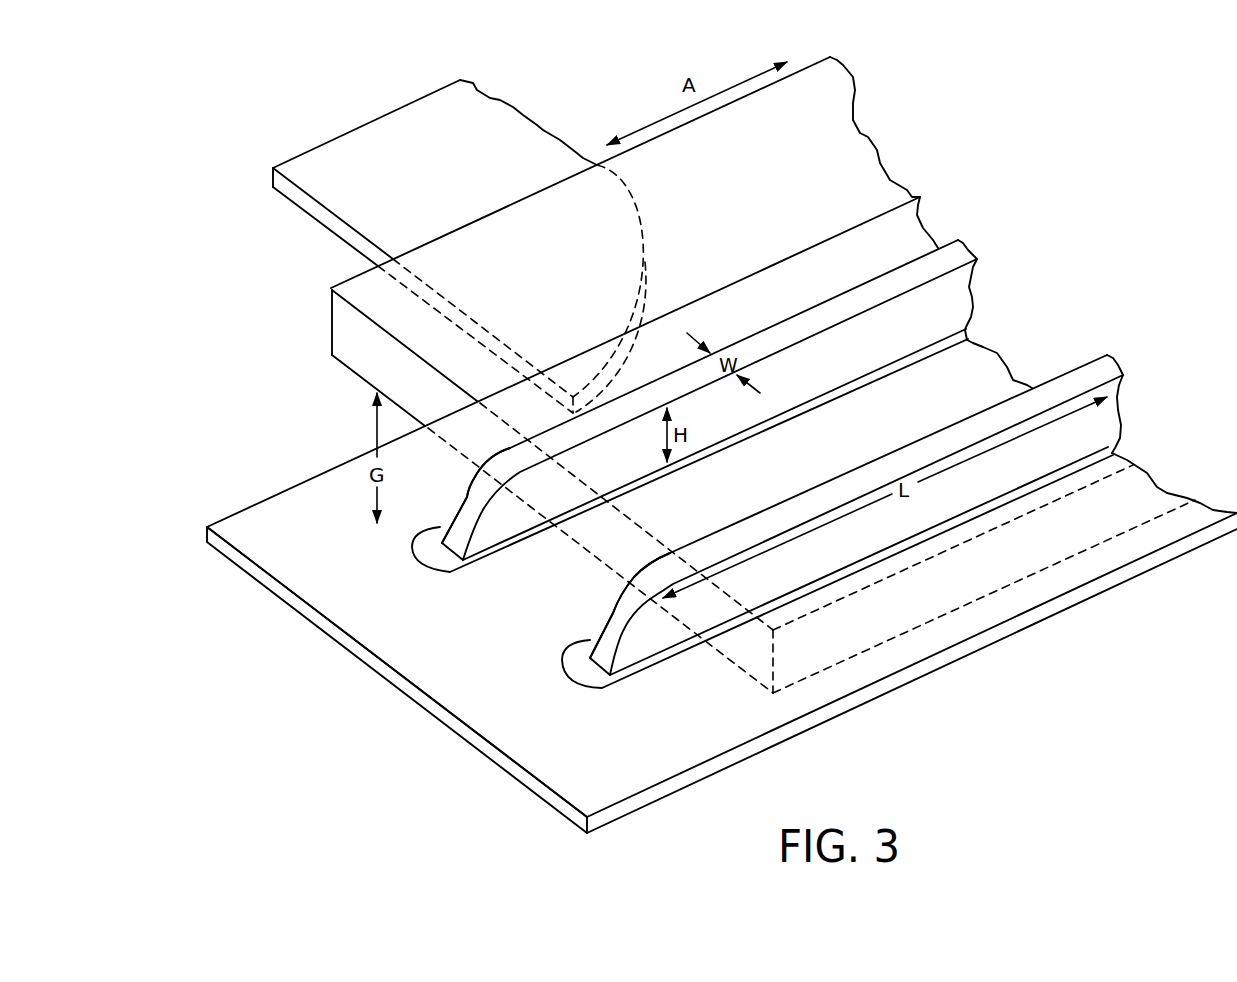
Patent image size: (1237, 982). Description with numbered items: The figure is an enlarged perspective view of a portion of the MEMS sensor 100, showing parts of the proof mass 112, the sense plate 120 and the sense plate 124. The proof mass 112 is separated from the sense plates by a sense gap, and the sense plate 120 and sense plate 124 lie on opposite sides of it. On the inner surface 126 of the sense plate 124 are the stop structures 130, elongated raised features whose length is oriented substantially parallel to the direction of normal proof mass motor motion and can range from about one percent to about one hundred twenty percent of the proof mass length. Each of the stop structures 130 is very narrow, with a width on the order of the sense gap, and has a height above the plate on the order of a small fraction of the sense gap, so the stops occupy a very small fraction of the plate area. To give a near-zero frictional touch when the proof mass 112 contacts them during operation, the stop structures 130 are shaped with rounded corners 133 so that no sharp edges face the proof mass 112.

The MEMS sensor 100 is at (233, 413).
The proof mass 112 is at (367, 288).
The sense plate 120 is at (432, 161).
The sense plate 124 is at (603, 772).
The inner surface 126 is at (423, 660).
The stop structures 130 is at (497, 532).
The rounded corners 133 is at (472, 488).